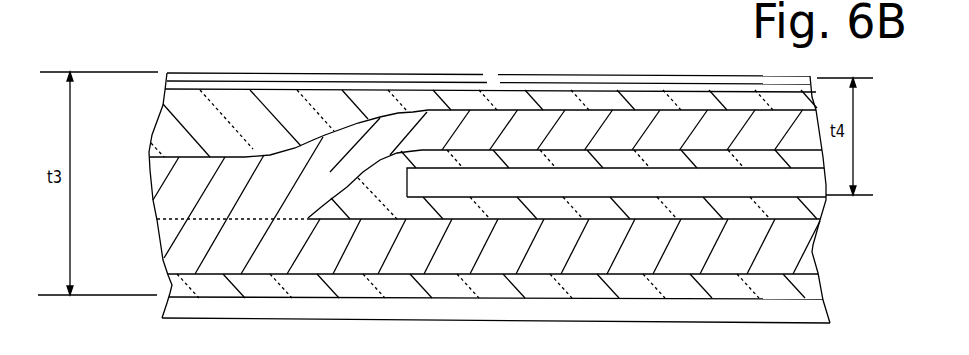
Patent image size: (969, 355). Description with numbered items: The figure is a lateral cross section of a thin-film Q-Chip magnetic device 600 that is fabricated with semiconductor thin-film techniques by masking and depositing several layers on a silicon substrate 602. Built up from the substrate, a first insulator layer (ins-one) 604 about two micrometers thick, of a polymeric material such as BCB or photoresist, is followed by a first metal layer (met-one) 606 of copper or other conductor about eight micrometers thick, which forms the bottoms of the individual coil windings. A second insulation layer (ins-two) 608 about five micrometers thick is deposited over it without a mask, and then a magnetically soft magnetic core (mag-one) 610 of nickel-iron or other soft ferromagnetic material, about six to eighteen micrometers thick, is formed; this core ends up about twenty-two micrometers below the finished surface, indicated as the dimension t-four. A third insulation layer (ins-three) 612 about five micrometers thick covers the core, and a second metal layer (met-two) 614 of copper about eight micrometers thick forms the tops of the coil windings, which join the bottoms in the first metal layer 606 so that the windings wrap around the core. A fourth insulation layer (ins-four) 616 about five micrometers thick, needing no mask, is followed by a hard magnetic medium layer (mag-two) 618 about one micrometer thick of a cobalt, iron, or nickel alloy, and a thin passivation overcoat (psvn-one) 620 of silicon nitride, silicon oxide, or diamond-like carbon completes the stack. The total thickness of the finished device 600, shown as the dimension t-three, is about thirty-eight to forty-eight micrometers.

The Q-Chip magnetic device 600 is at (231, 40).
The silicon substrate 602 is at (838, 313).
The first layer (ins-1) 604 is at (830, 286).
The first metal layer (met-1) 606 is at (835, 252).
The second insulation layer (ins-2) 608 is at (548, 219).
The magnetically soft magnetic core (mag-1) 610 is at (616, 192).
The third insulation layer (ins-3) 612 is at (602, 150).
The second metal layer (met-2) 614 is at (556, 141).
The fourth insulation layer (ins-4) 616 is at (321, 126).
The hard magnetic medium layer (mag-2) 618 is at (490, 88).
The passivation overcoat (psvn-1) 620 is at (453, 73).